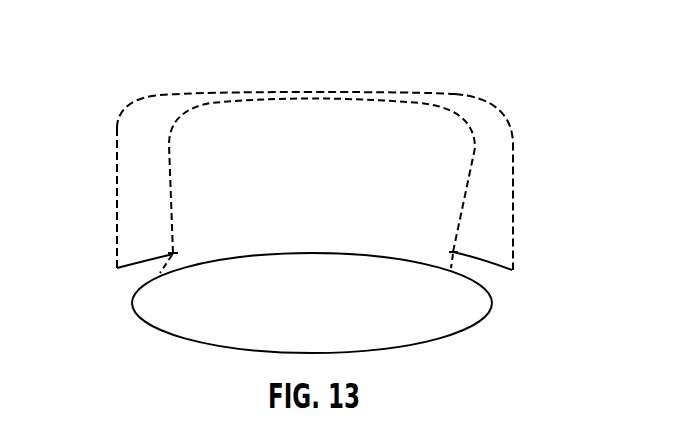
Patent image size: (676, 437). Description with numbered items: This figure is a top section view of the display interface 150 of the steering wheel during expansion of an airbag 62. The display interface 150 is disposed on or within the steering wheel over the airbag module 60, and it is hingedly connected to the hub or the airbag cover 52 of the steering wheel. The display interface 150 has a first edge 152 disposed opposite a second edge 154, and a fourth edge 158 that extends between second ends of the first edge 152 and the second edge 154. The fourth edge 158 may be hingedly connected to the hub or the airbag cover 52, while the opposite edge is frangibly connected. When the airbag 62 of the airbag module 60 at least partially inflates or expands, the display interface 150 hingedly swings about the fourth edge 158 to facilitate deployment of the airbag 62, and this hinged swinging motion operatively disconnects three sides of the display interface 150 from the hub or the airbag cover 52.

The display interface 150 is at (317, 154).
The first edge 152 is at (116, 197).
The second edge 154 is at (524, 182).
The fourth edge 158 is at (175, 95).
The airbag module 60 is at (482, 163).
The airbag cover 52 is at (498, 272).
The airbag 62 is at (455, 340).